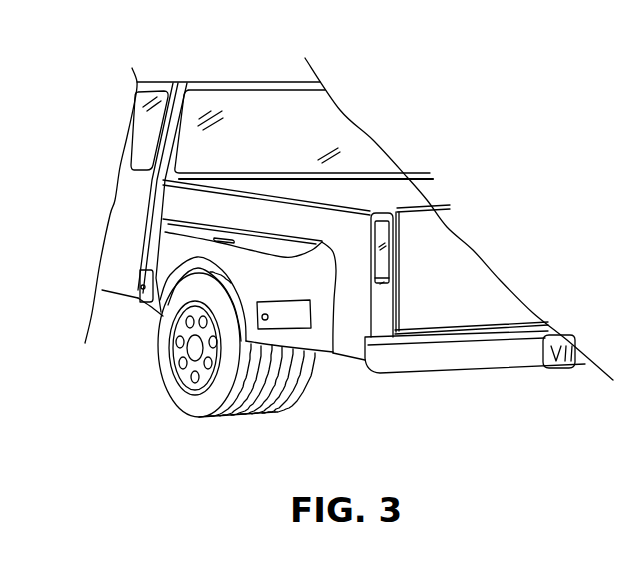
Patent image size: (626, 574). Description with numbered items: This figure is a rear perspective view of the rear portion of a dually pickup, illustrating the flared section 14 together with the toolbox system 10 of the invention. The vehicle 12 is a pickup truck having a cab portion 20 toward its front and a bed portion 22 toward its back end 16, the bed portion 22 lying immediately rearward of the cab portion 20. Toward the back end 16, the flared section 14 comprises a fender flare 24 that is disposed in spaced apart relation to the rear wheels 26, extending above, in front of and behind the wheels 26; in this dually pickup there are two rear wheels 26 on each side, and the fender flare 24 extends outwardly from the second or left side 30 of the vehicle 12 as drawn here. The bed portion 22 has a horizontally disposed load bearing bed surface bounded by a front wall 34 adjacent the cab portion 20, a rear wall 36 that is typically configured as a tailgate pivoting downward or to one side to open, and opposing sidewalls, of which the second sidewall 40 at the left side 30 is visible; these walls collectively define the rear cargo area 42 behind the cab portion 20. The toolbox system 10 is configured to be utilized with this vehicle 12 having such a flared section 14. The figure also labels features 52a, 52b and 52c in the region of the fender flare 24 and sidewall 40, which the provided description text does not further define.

The toolbox system 10 is at (142, 328).
The vehicle 12 is at (413, 96).
The flared section 14 is at (284, 358).
The back end 16 is at (428, 392).
The cab portion 20 is at (243, 64).
The bed portion 22 is at (491, 217).
The fender flare 24 is at (317, 258).
The wheels 26 is at (171, 415).
The second or left side 30 is at (110, 103).
The front wall 34 is at (320, 197).
The rear wall 36 is at (453, 305).
The second sidewall 40 is at (160, 193).
The rear cargo area 42 is at (391, 182).
The bed side recessed panel 52a is at (174, 225).
The bed front flap 52b is at (130, 275).
The fender access cover 52c is at (298, 328).